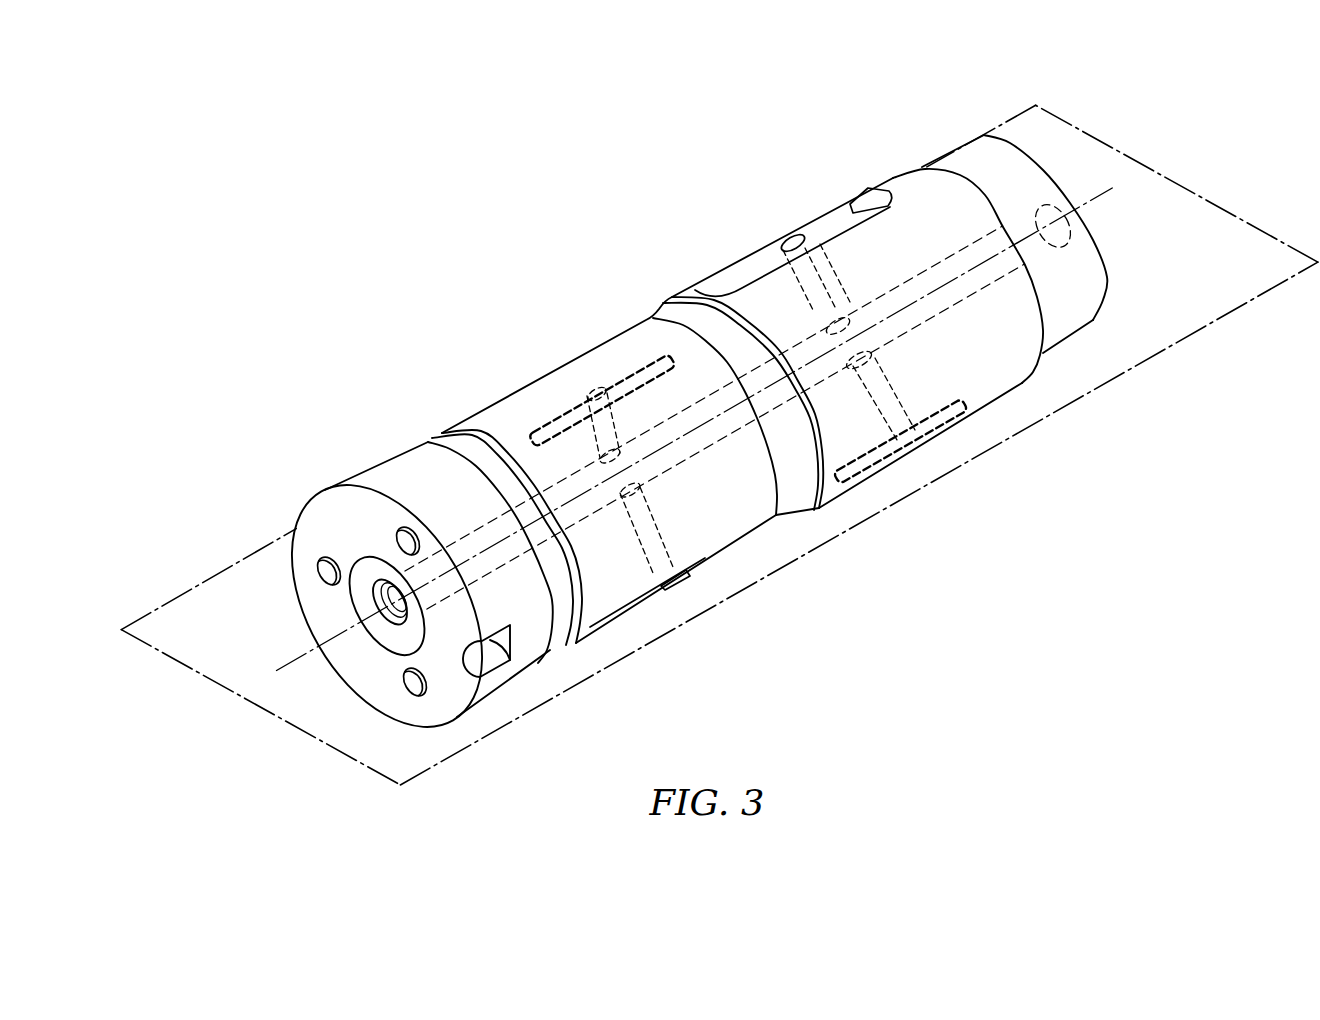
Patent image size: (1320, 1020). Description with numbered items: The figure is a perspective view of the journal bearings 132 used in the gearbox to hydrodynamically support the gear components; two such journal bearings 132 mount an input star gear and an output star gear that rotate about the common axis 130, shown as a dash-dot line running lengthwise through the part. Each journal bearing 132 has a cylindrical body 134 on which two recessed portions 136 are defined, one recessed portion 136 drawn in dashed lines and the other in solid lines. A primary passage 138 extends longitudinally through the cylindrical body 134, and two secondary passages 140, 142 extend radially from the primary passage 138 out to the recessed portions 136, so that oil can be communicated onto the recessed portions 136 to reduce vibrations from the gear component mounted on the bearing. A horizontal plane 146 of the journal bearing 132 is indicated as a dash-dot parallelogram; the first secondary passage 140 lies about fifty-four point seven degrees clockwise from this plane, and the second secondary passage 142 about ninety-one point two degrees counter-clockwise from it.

The common axis 130 is at (283, 668).
The journal bearing 132 is at (436, 341).
The cylindrical body 134 is at (1087, 310).
The recessed portion 136 is at (857, 207).
The primary passage 138 is at (380, 594).
The first secondary passage 140 is at (817, 293).
The second secondary passage 142 is at (700, 552).
The horizontal plane 146 is at (1130, 181).